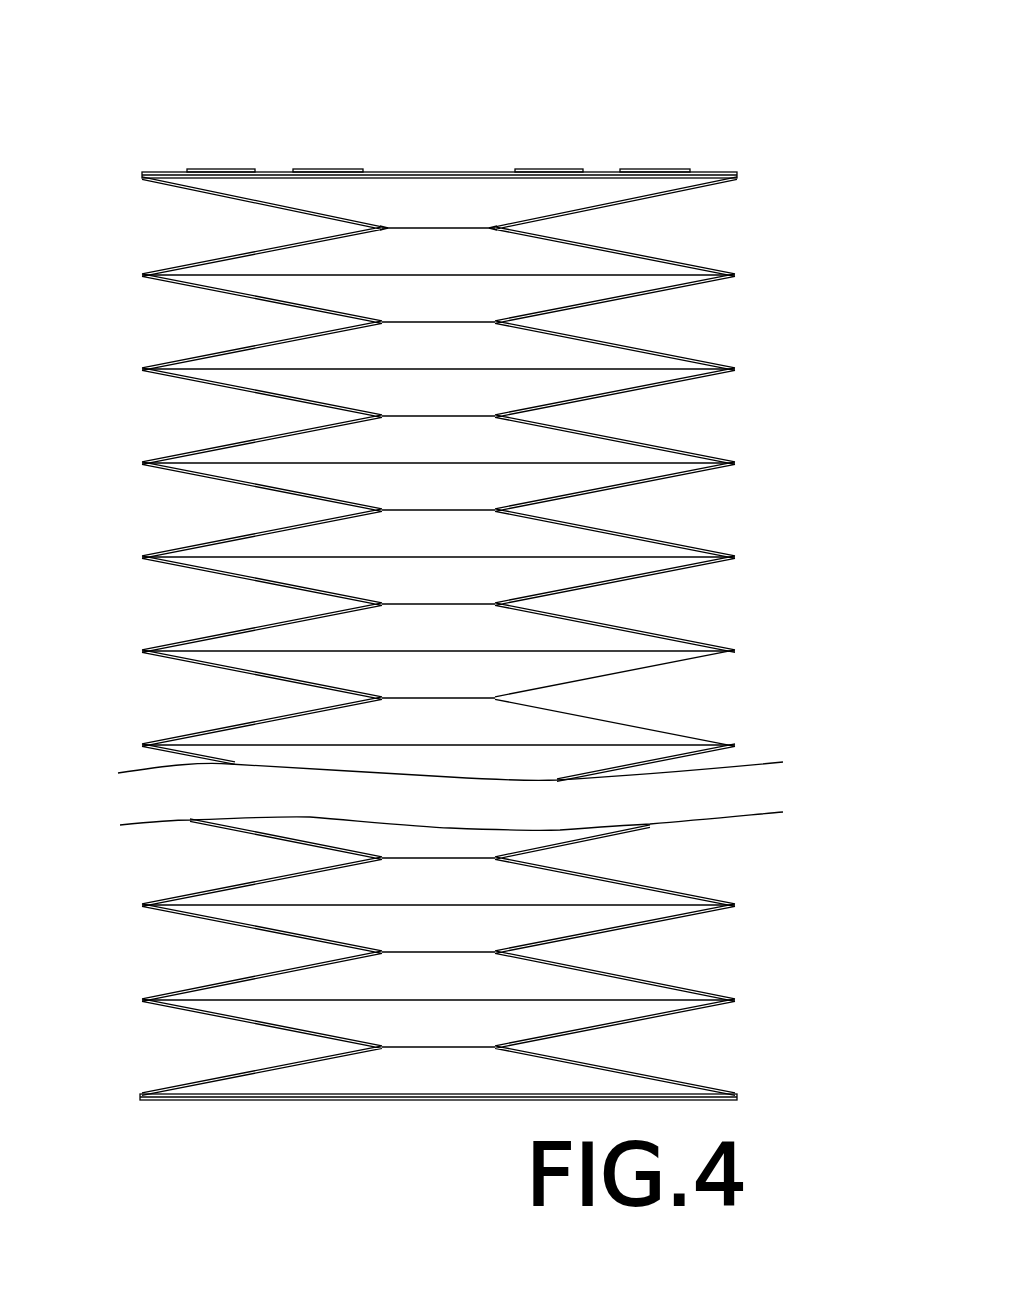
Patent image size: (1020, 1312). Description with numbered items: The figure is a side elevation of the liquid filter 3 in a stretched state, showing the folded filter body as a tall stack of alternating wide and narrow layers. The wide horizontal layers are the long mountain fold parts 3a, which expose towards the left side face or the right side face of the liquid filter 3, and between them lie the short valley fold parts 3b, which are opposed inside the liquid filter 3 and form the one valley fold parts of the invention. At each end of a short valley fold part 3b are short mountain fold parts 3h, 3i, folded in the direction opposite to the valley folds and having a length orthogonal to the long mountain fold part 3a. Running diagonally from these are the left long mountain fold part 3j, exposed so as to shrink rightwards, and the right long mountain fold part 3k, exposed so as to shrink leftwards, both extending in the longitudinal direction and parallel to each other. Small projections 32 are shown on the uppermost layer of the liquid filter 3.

The liquid filter 3 is at (600, 125).
The projections on top plate 32 is at (218, 169).
The long mountain fold part 3a is at (242, 273).
The short valley fold part 3b is at (443, 228).
The short mountain fold part 3h is at (386, 227).
The short mountain fold part 3i is at (495, 228).
The left long mountain fold part 3j is at (228, 295).
The right long mountain fold part 3k is at (655, 293).